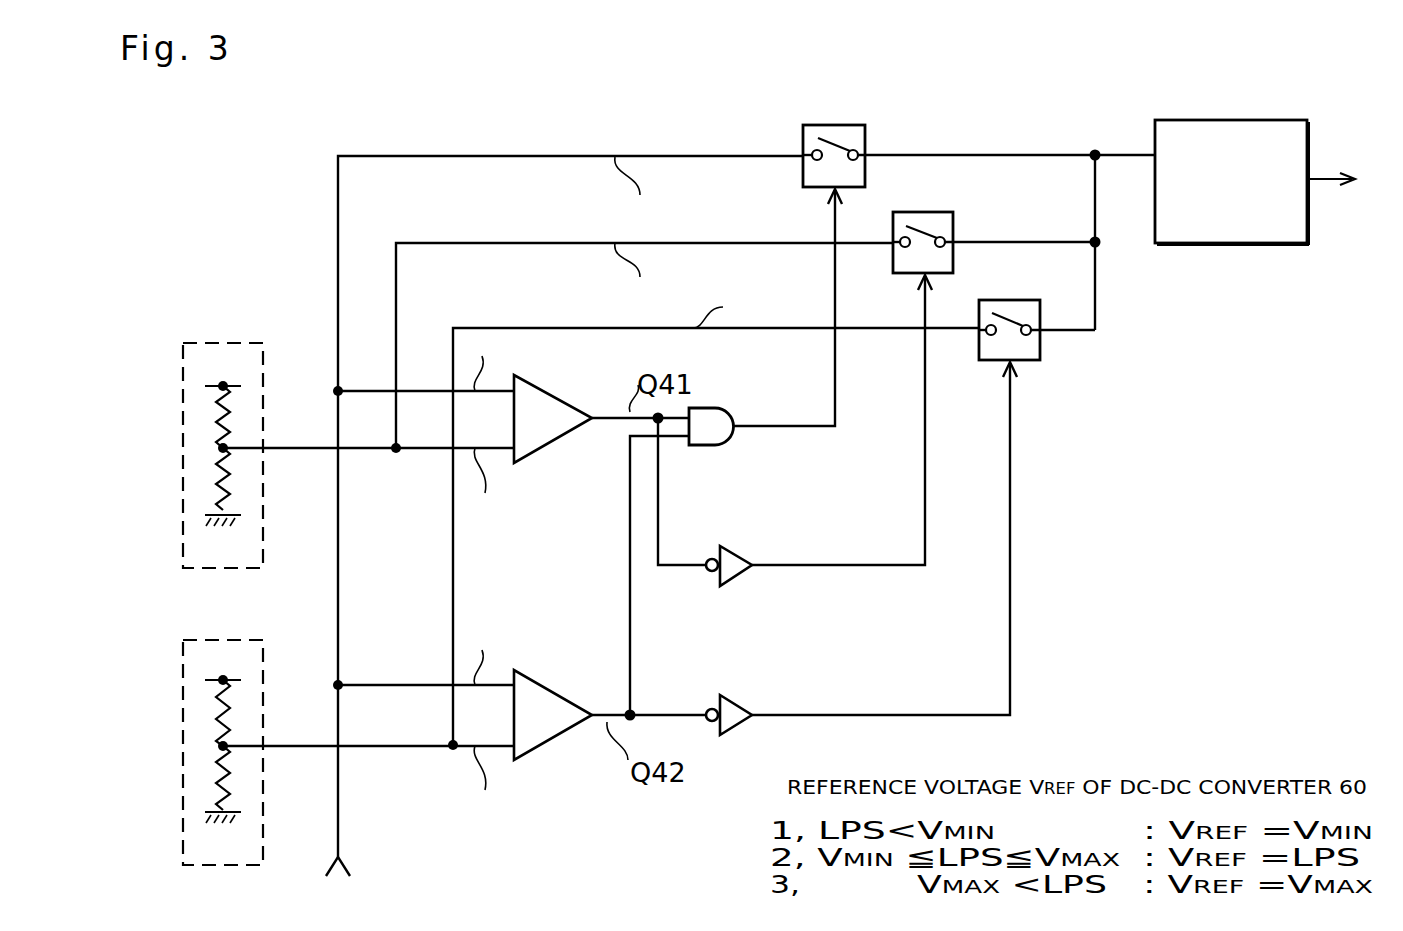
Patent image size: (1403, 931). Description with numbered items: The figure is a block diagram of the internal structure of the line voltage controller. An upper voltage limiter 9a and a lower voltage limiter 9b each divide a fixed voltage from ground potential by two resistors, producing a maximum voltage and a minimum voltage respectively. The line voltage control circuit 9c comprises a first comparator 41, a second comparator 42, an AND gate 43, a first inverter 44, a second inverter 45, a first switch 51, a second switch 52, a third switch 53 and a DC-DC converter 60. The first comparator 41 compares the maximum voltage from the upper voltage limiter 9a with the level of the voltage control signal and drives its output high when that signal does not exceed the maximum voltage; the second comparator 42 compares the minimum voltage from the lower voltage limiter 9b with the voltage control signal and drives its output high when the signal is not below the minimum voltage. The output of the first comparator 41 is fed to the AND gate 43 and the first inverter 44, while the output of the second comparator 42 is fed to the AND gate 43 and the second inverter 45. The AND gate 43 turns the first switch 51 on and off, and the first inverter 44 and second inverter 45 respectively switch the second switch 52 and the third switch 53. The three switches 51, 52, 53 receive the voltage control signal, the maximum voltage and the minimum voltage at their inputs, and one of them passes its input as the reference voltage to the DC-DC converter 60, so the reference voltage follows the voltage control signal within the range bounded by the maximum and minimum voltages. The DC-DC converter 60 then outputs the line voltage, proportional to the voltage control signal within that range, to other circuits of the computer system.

The upper voltage limiter 9a is at (186, 360).
The lower voltage limiter 9b is at (186, 668).
The line voltage control circuit 9c is at (707, 150).
The first comparator 41 is at (575, 402).
The second comparator 42 is at (562, 695).
The AND gate 43 is at (740, 410).
The first inverter 44 is at (745, 556).
The second inverter 45 is at (745, 707).
The first switch 51 is at (866, 142).
The second switch 52 is at (954, 228).
The third switch 53 is at (1041, 312).
The DC-DC converter 60 is at (1170, 245).